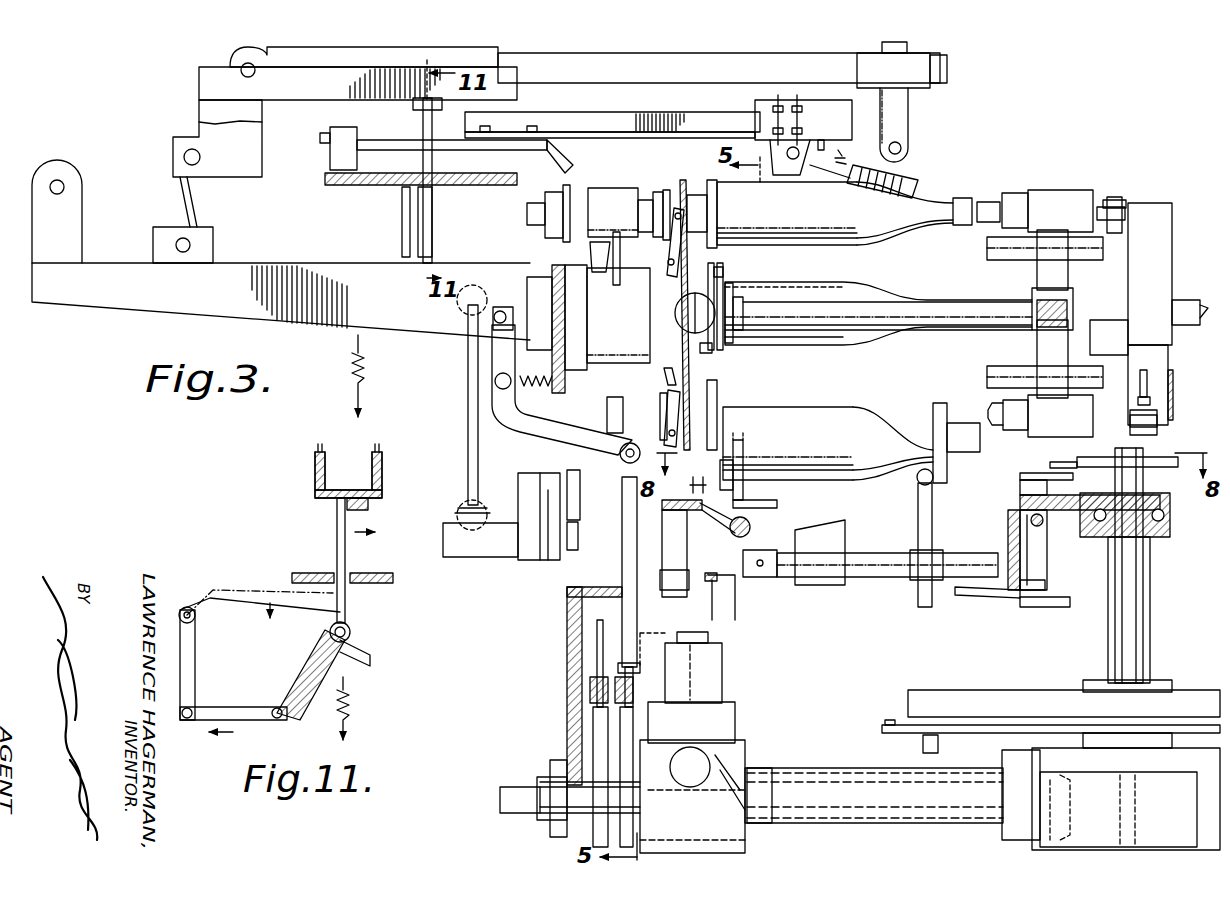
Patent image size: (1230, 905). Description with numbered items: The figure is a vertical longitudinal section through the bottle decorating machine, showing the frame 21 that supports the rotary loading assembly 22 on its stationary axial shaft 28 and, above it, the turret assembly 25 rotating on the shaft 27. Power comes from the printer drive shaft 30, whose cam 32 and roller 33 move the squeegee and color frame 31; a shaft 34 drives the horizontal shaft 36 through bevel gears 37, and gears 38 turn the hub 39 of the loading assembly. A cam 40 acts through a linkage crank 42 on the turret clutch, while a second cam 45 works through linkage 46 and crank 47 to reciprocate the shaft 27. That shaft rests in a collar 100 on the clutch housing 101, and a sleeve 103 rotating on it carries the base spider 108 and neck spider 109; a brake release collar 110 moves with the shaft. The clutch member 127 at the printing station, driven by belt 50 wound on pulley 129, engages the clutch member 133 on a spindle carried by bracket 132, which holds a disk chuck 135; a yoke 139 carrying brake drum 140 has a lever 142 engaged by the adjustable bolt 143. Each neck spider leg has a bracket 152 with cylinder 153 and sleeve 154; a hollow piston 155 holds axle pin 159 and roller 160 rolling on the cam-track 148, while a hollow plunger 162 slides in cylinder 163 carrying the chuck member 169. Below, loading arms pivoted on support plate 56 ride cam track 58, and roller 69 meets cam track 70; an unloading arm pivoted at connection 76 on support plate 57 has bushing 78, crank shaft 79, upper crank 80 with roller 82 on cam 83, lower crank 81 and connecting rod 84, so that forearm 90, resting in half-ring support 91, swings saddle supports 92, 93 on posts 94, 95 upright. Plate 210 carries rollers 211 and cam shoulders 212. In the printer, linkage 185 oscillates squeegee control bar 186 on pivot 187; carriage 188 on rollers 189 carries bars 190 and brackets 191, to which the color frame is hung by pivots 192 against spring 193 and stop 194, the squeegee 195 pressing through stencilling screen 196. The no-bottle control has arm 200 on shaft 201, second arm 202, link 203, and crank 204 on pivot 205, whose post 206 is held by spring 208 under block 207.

In FIG. 3, the frame 21 is at (553, 272).
In FIG. 3, the rotary loading assembly 22 is at (1166, 634).
In FIG. 3, the turret assembly 25 is at (1052, 175).
In FIG. 3, the shaft 27 is at (520, 310).
In FIG. 3, the shaft 28 is at (1143, 480).
In FIG. 3, the drive shaft 30 is at (623, 405).
In FIG. 3, the squeegee and color frame 31 is at (930, 182).
In FIG. 3, the cam 32 is at (580, 497).
In FIG. 3, the roller 33 is at (578, 535).
In FIG. 3, the shaft 34 is at (685, 635).
In FIG. 3, the horizontal shaft 36 is at (512, 788).
In FIG. 3, the bevel gears 37 is at (722, 775).
In FIG. 3, the gears 38 is at (1082, 795).
In FIG. 3, the hub 39 is at (1150, 595).
In FIG. 3, the cam 40 is at (598, 735).
In FIG. 3, the linkage crank 42 is at (598, 650).
In FIG. 3, the second cam 45 is at (630, 712).
In FIG. 3, the linkage 46 is at (624, 550).
In FIG. 3, the crank 47 is at (532, 425).
In FIG. 3, the belt 50 is at (573, 177).
In FIG. 3, the support plate 56 is at (1165, 525).
In FIG. 3, the support plate 57 is at (1055, 512).
In FIG. 3, the cam track 58 is at (715, 575).
In FIG. 3, the roller 69 is at (695, 475).
In FIG. 3, the cam track 70 is at (720, 520).
In FIG. 3, the pivoted connection 76 is at (1030, 518).
In FIG. 3, the bushing 78 is at (1040, 557).
In FIG. 3, the crank shaft 79 is at (1040, 585).
In FIG. 3, the upper crank 80 is at (1027, 473).
In FIG. 3, the lower crank 81 is at (1045, 607).
In FIG. 3, the roller 82 is at (1060, 462).
In FIG. 3, the cam 83 is at (1085, 457).
In FIG. 3, the connecting rod 84 is at (972, 598).
In FIG. 3, the forearm 90 is at (872, 553).
In FIG. 3, the half-ring support 91 is at (1008, 530).
In FIG. 3, the saddle support 92 is at (745, 485).
In FIG. 3, the saddle support 93 is at (950, 455).
In FIG. 3, the post 94 is at (770, 595).
In FIG. 3, the post 95 is at (932, 515).
In FIG. 3, the collar 100 is at (527, 282).
In FIG. 3, the clutch housing 101 is at (618, 315).
In FIG. 3, the sleeve 103 is at (948, 300).
In FIG. 3, the base spider 108 is at (705, 378).
In FIG. 3, the neck spider 109 is at (1030, 272).
In FIG. 3, the brake release collar 110 is at (712, 350).
In FIG. 3, the clutch member 127 is at (650, 198).
In FIG. 3, the pulley 129 is at (578, 203).
In FIG. 3, the bracket 132 is at (675, 188).
In FIG. 3, the clutch member 133 is at (660, 418).
In FIG. 3, the chuck 135 is at (720, 197).
In FIG. 3, the yoke 139 is at (667, 238).
In FIG. 3, the brake drum 140 is at (665, 190).
In FIG. 3, the lever 142 is at (664, 372).
In FIG. 3, the adjustable bolt 143 is at (723, 272).
In FIG. 3, the cam-track 148 is at (1157, 418).
In FIG. 3, the bracket 152 is at (1050, 348).
In FIG. 3, the cylinder 153 is at (990, 245).
In FIG. 3, the sleeve 154 is at (1072, 190).
In FIG. 3, the hollow piston 155 is at (1150, 380).
In FIG. 3, the axle pin 159 is at (1150, 400).
In FIG. 3, the roller 160 is at (1120, 205).
In FIG. 3, the hollow plunger 162 is at (1100, 205).
In FIG. 3, the cylinder 163 is at (1013, 196).
In FIG. 3, the chuck member 169 is at (983, 197).
In FIG. 3, the linkage 185 is at (244, 184).
In FIG. 3, the squeegee control bar 186 is at (323, 93).
In FIG. 11, the squeegee control bar 186 is at (315, 494).
In FIG. 3, the pivot 187 is at (254, 72).
In FIG. 3, the carriage 188 is at (383, 142).
In FIG. 3, the rollers 189 is at (343, 185).
In FIG. 3, the bars 190 is at (657, 113).
In FIG. 3, the adjustable brackets 191 is at (810, 92).
In FIG. 3, the pivots 192 is at (795, 165).
In FIG. 3, the spring 193 is at (856, 153).
In FIG. 3, the stop 194 is at (825, 160).
In FIG. 3, the squeegee 195 is at (912, 180).
In FIG. 3, the stencilling screen 196 is at (880, 190).
In FIG. 11, the arm 200 is at (237, 590).
In FIG. 11, the shaft 201 is at (196, 615).
In FIG. 11, the second arm 202 is at (195, 658).
In FIG. 11, the link 203 is at (228, 707).
In FIG. 3, the crank 204 is at (433, 212).
In FIG. 11, the crank 204 is at (312, 650).
In FIG. 3, the pivot 205 is at (405, 238).
In FIG. 11, the pivot 205 is at (352, 632).
In FIG. 3, the post 206 is at (430, 136).
In FIG. 11, the post 206 is at (338, 550).
In FIG. 3, the block 207 is at (413, 105).
In FIG. 11, the block 207 is at (368, 505).
In FIG. 11, the spring 208 is at (350, 707).
In FIG. 3, the plate 210 is at (1000, 692).
In FIG. 3, the rollers 211 is at (940, 748).
In FIG. 3, the shoulders 212 is at (890, 735).